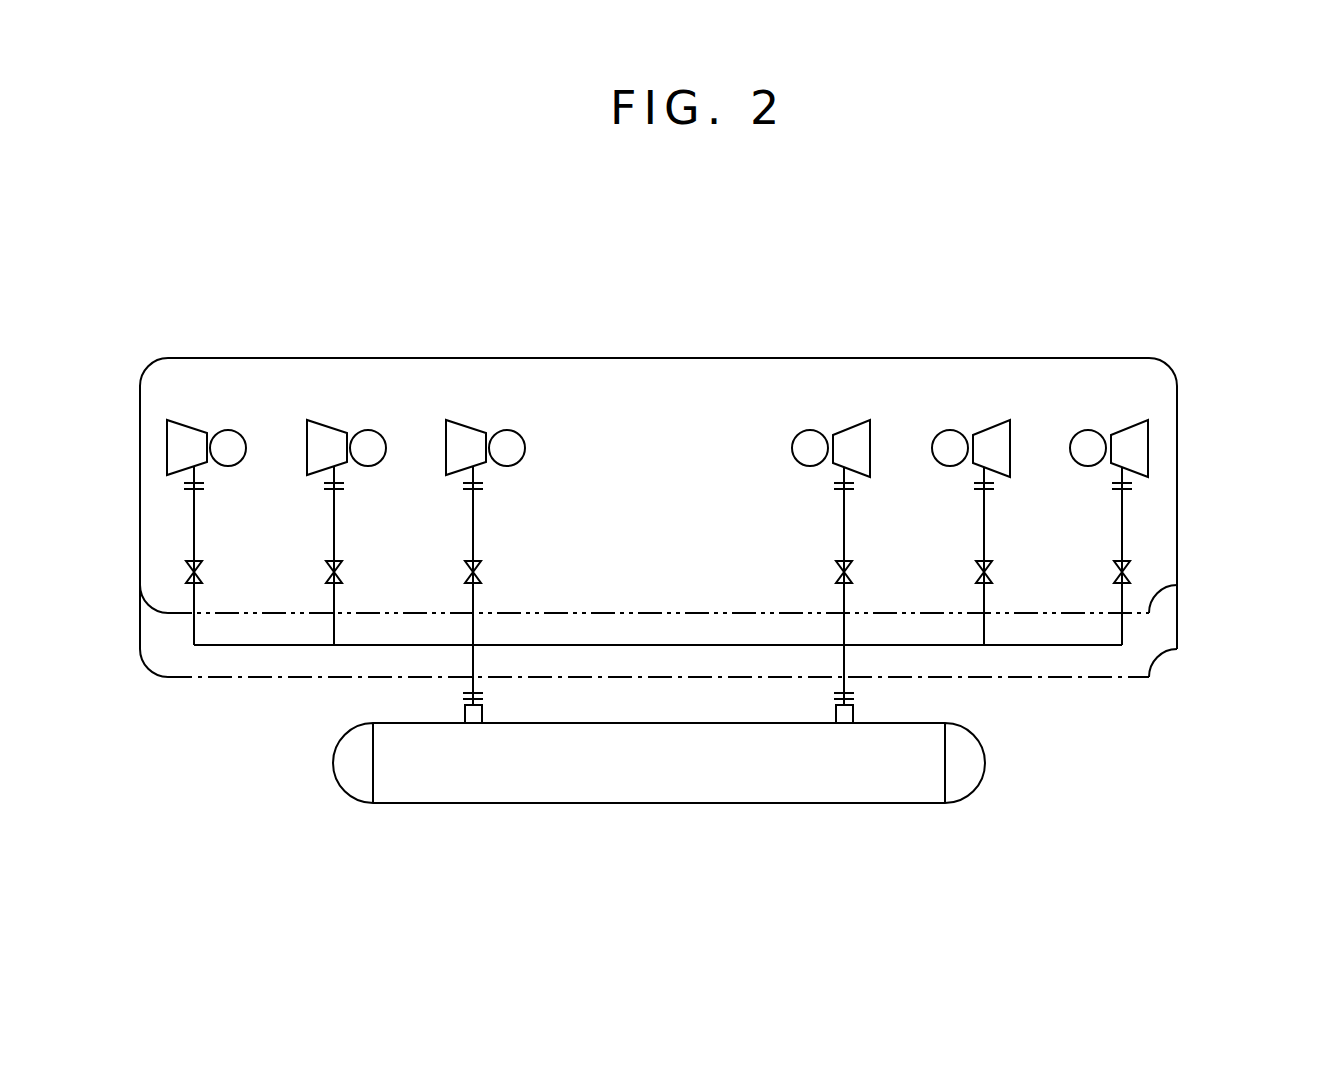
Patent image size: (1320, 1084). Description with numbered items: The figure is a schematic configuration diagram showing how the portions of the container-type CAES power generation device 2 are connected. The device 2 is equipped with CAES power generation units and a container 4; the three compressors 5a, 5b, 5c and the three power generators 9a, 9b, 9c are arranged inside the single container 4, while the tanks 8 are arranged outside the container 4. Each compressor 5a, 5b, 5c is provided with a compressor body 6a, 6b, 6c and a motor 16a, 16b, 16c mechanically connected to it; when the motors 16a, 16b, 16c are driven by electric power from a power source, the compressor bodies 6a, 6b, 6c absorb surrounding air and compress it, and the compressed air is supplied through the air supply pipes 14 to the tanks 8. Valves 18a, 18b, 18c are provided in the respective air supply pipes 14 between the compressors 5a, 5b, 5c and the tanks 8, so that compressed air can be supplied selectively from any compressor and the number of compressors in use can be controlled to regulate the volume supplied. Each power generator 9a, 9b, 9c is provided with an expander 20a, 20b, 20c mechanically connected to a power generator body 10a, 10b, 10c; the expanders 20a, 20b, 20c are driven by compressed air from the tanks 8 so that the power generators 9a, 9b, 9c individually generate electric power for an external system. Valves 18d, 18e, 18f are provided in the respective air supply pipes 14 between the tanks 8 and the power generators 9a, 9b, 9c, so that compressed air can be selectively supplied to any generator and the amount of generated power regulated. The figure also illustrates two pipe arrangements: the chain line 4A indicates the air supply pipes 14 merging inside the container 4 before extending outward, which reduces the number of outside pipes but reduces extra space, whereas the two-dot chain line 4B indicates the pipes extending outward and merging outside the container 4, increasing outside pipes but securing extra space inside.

The container-type CAES power generation device 2 is at (1021, 328).
The container 4 is at (1177, 483).
The chain line 4A is at (1163, 672).
The two-dot chain line 4B is at (1158, 608).
The compressor 5a is at (211, 410).
The compressor 5b is at (351, 410).
The compressor 5c is at (487, 410).
The compressor body 6a is at (198, 430).
The compressor body 6b is at (338, 430).
The compressor body 6c is at (477, 430).
The motor 16a is at (230, 426).
The motor 16b is at (370, 426).
The motor 16c is at (509, 426).
The power generator 9a is at (834, 420).
The power generator 9b is at (974, 420).
The power generator 9c is at (1112, 420).
The power generator body 10a is at (818, 430).
The power generator body 10b is at (958, 430).
The power generator body 10c is at (1096, 430).
The expander 20a is at (848, 422).
The expander 20b is at (988, 422).
The expander 20c is at (1126, 422).
The air supply pipe 14 is at (473, 515).
The valve 18a is at (199, 572).
The valve 18b is at (339, 572).
The valve 18c is at (478, 572).
The valve 18d is at (840, 572).
The valve 18e is at (980, 572).
The valve 18f is at (1118, 572).
The tank 8 is at (795, 805).